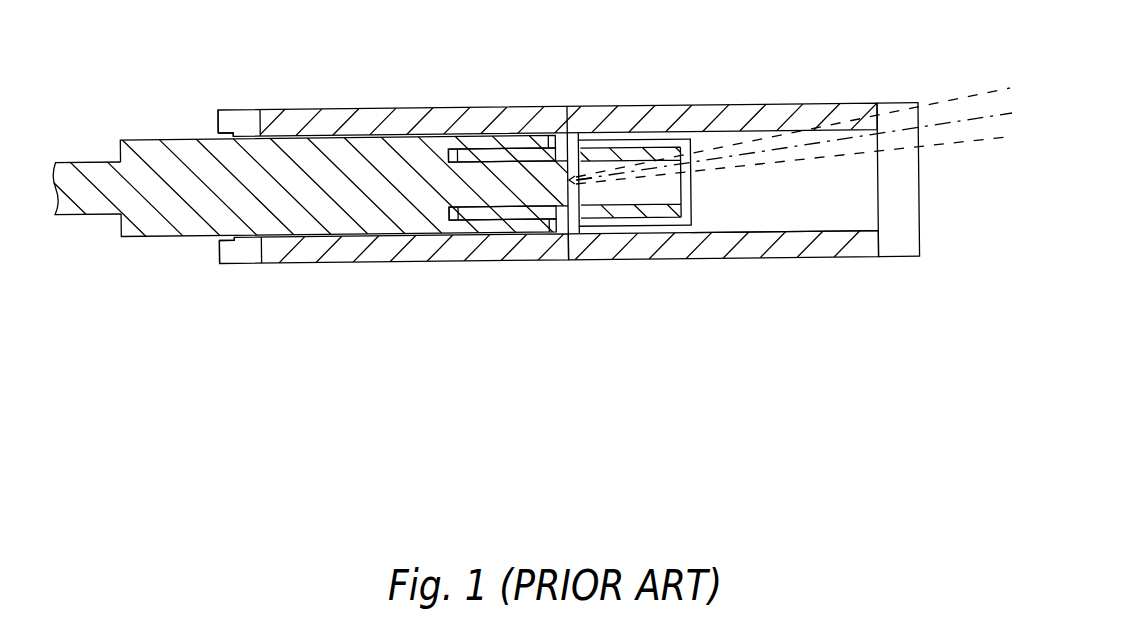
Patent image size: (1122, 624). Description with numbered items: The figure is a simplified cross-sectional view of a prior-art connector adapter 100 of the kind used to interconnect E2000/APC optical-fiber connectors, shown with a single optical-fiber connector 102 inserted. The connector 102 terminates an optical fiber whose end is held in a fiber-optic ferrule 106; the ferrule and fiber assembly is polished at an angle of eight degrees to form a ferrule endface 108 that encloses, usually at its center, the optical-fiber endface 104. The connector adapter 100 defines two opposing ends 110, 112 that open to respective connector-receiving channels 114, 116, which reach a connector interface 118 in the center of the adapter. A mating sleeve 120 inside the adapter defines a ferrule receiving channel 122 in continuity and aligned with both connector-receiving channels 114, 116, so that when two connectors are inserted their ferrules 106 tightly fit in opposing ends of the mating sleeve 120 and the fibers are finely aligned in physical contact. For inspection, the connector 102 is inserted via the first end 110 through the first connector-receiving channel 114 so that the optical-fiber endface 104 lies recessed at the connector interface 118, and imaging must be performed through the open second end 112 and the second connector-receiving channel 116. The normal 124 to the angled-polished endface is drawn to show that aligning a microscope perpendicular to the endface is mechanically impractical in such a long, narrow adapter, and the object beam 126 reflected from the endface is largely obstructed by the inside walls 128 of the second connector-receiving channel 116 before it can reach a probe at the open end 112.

The connector adapter 100 is at (607, 107).
The optical-fiber connector 102 is at (155, 139).
The optical-fiber endface 104 is at (572, 180).
The fiber-optic ferrule 106 is at (497, 195).
The ferrule endface 108 is at (570, 192).
The first end 110 is at (218, 253).
The second end 112 is at (918, 226).
The first connector-receiving channel 114 is at (310, 233).
The second connector-receiving channel 116 is at (763, 221).
The connector interface 118 is at (567, 260).
The mating sleeve 120 is at (470, 138).
The ferrule receiving channel 122 is at (650, 190).
The normal to the angled-polished optical-fiber endface 124 is at (1003, 113).
The object beam 126 is at (970, 92).
The inside walls 128 is at (716, 140).